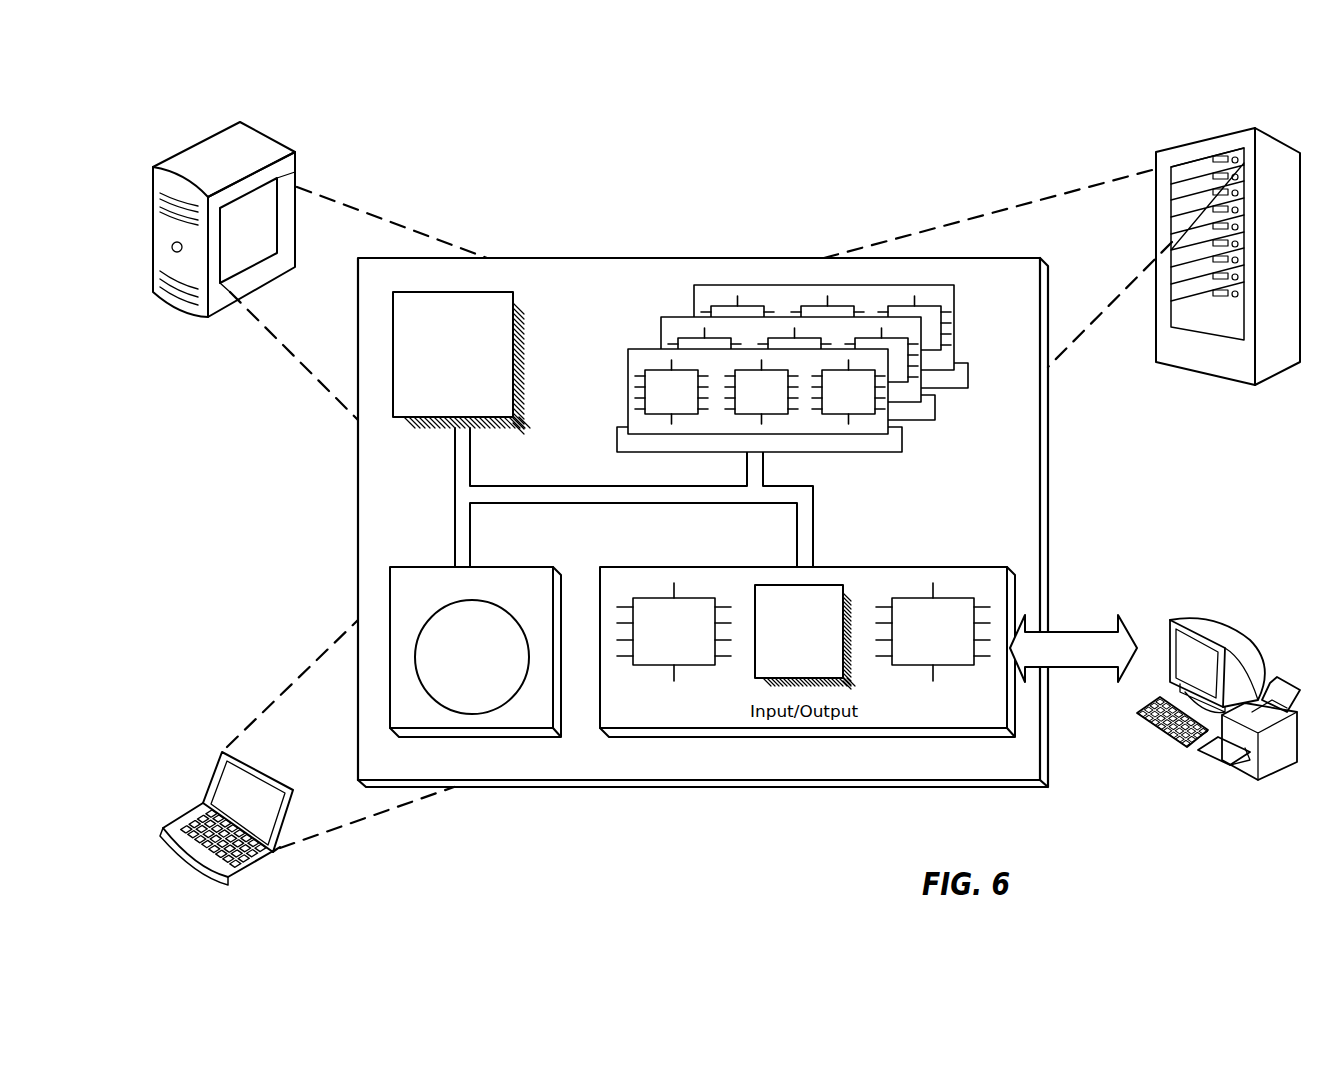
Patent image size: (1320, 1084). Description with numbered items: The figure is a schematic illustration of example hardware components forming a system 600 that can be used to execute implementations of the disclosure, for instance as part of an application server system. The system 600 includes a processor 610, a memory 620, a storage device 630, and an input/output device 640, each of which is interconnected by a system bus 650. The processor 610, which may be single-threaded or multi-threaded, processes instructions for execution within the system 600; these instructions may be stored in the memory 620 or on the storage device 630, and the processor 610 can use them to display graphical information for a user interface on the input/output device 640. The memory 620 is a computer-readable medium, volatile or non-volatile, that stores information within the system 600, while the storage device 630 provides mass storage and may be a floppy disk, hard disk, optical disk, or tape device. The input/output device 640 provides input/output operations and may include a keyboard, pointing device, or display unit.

The system 600 is at (531, 146).
The processor 610 is at (504, 408).
The memory 620 is at (959, 414).
The storage device 630 is at (544, 721).
The input/output device 640 is at (1168, 624).
The system bus 650 is at (636, 503).